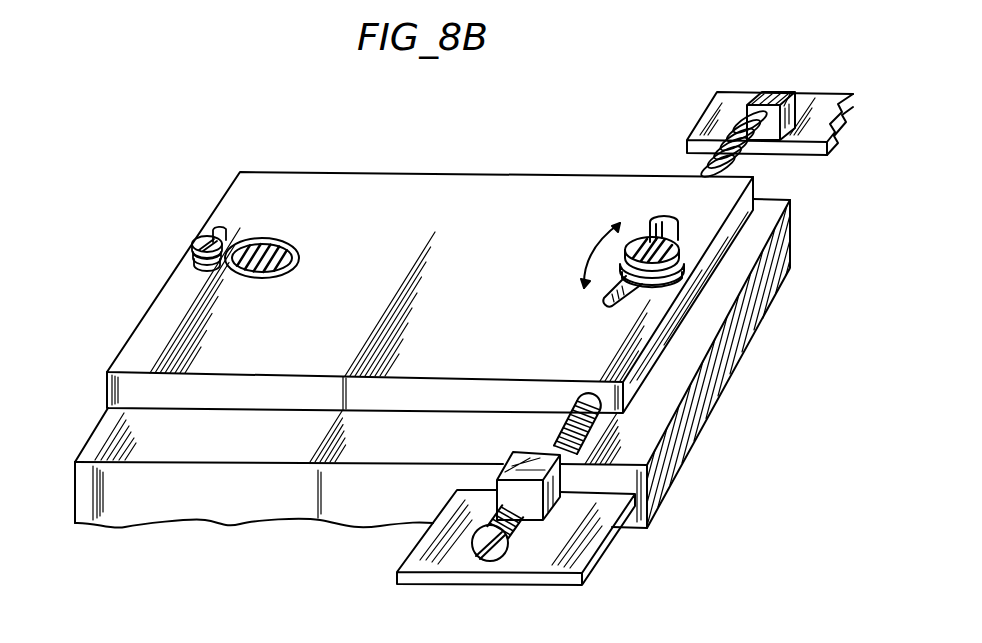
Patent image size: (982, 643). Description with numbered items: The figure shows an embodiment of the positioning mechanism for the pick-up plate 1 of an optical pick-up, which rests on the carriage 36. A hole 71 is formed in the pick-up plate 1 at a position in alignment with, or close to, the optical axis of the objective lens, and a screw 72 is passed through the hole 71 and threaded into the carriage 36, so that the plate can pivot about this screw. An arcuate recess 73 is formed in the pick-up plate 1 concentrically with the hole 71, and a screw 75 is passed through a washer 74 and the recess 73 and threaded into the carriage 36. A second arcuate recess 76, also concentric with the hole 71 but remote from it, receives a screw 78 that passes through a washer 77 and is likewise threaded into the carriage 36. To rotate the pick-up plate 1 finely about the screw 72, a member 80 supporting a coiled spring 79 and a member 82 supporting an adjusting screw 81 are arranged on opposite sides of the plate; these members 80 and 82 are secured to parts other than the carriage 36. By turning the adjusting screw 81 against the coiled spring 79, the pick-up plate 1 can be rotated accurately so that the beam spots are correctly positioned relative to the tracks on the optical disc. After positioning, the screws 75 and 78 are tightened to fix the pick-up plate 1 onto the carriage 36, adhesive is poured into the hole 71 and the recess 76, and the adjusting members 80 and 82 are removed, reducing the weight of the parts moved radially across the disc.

The pick-up plate 1 is at (416, 195).
The carriage 36 is at (253, 510).
The hole 71 is at (280, 248).
The screw 72 is at (252, 250).
The arcuate recess 73 is at (215, 228).
The washer 74 is at (193, 266).
The screw 75 is at (193, 240).
The arcuate recess 76 is at (662, 220).
The washer 77 is at (677, 277).
The screw 78 is at (672, 252).
The coiled spring 79 is at (715, 170).
The member for supporting a coiled spring 80 is at (772, 93).
The adjusting screw 81 is at (493, 557).
The member for supporting an adjusting screw 82 is at (563, 490).